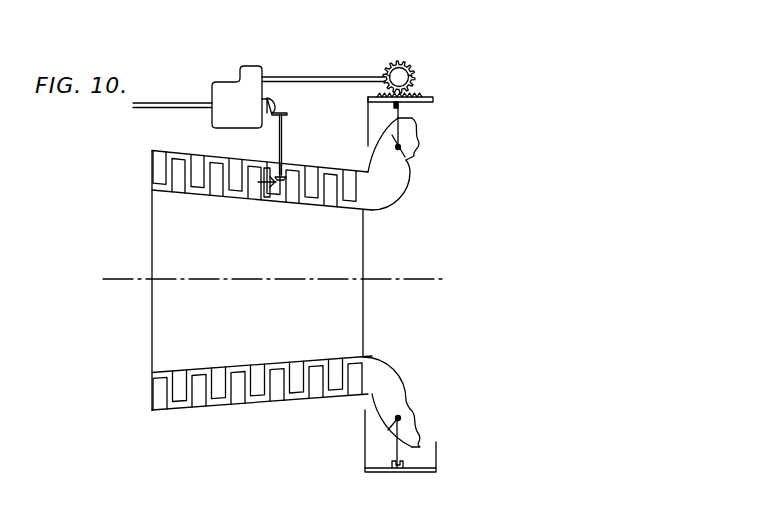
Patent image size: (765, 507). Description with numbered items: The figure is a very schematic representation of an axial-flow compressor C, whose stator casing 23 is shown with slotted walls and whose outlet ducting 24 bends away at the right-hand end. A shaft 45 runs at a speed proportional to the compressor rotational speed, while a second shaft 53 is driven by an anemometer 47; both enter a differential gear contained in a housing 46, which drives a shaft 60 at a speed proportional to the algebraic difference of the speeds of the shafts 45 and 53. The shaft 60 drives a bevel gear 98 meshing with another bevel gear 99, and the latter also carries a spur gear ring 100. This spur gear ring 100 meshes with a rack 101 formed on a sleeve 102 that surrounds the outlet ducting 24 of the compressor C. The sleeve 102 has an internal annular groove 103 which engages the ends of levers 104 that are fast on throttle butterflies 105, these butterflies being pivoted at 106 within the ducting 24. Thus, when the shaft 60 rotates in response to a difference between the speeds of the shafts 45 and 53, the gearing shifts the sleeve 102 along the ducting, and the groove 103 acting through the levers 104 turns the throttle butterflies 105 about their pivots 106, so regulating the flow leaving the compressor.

The stator casing 23 is at (177, 150).
The outlet ducting 24 is at (378, 208).
The shaft 45 is at (162, 103).
The housing 46 is at (257, 66).
The anemometer 47 is at (267, 197).
The shaft 53 is at (268, 100).
The shaft 60 is at (322, 77).
The bevel gear 98 is at (388, 73).
The bevel gear 99 is at (410, 74).
The spur gear ring 100 is at (398, 82).
The rack 101 is at (423, 93).
The sleeve 102 is at (433, 100).
The internal annular groove 103 is at (402, 102).
The levers 104 is at (398, 117).
The throttle butterflies 105 is at (397, 146).
The pivot 106 is at (400, 418).
The axial-flow compressor C is at (248, 405).